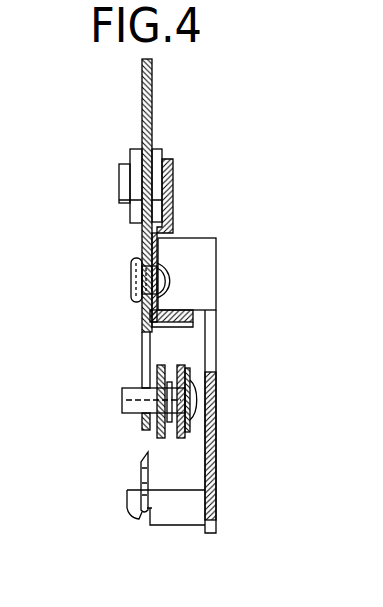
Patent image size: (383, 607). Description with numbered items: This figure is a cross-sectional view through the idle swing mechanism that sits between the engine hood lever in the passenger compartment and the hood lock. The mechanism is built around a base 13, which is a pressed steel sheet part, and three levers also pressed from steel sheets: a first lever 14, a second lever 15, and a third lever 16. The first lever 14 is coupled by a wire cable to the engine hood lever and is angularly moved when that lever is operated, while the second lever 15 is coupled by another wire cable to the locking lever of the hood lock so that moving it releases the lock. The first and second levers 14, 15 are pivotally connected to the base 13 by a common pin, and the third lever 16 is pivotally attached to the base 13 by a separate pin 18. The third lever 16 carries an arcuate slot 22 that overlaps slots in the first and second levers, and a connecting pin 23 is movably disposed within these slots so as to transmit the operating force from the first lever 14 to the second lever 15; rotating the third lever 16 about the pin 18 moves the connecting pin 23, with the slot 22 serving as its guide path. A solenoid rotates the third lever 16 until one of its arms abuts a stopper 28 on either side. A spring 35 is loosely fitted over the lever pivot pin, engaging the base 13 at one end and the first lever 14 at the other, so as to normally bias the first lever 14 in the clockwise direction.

The base 13 is at (210, 450).
The first lever 14 is at (157, 372).
The second lever 15 is at (185, 372).
The third lever 16 is at (142, 85).
The pin 18 is at (132, 273).
The slot 22 is at (142, 353).
The connecting pin 23 is at (127, 400).
The stopper 28 is at (133, 160).
The spring 35 is at (141, 467).